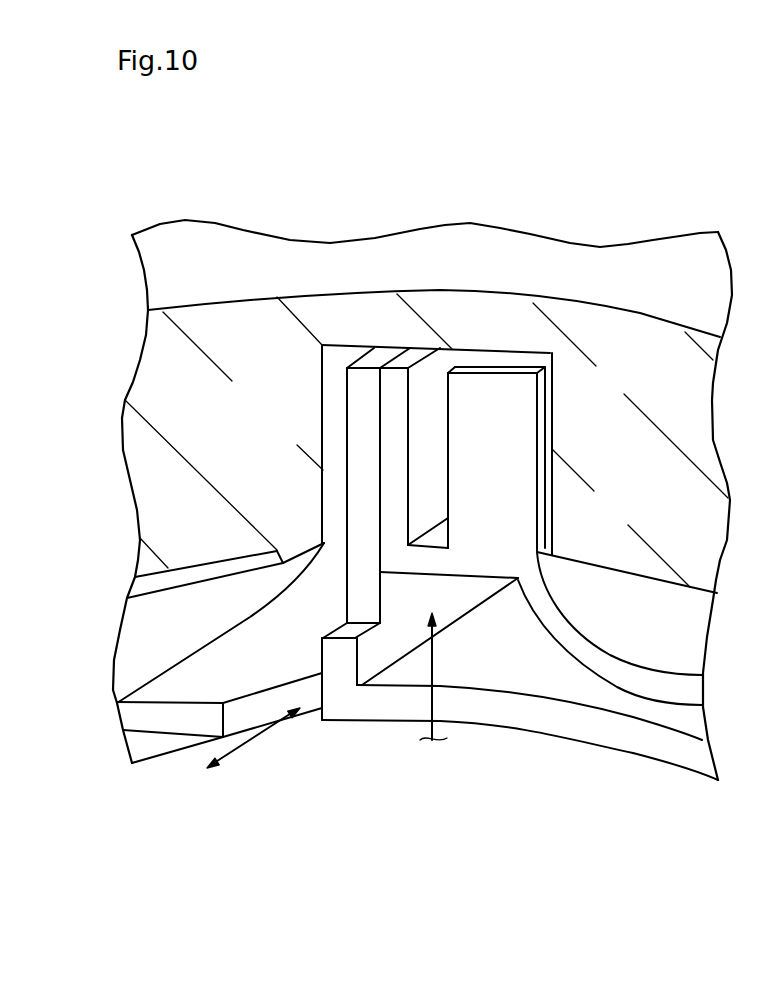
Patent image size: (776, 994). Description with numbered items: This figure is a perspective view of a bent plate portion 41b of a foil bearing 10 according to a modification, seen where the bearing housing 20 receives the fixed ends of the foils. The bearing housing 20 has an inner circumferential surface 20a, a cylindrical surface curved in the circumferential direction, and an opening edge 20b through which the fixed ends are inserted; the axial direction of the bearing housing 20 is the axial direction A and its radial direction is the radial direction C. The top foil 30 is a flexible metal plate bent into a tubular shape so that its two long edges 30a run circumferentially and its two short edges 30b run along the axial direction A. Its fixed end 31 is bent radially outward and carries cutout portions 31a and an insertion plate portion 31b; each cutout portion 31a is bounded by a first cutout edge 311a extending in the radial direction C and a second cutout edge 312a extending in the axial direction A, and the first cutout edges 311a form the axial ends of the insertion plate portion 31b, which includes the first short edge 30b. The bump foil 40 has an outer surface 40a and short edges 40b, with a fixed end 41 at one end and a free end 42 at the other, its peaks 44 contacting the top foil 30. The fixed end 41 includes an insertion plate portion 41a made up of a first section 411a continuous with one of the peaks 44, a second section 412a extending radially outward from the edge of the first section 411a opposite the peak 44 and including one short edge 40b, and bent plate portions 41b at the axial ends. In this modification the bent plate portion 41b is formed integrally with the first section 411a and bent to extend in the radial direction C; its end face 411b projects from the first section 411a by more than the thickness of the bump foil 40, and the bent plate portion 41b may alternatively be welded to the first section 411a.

The connector device 10 is at (528, 247).
The bearing housing 20 is at (710, 313).
The inner circumferential surface 20a is at (698, 596).
The opening edge of housing 20b is at (538, 355).
The top foil 30 is at (377, 722).
The long edge 30a is at (343, 700).
The short edge 30b is at (388, 357).
The fixed end 31 is at (360, 357).
The cutout portion 31a is at (368, 547).
The insertion plate portion 31b is at (358, 433).
The first cutout edge 311a is at (358, 402).
The second cutout edge 312a is at (348, 627).
The bump foil 40 is at (667, 672).
The curved surface of base member 40a is at (558, 628).
The short edge 40b is at (423, 353).
The fixed end 41 is at (453, 358).
The insertion plate portion 41a is at (547, 482).
The bent plate portion 41b is at (518, 427).
The first section 411a is at (426, 560).
The end face 411b is at (507, 392).
The second section 412a is at (395, 513).
The free end 42 is at (220, 570).
The peak 44 is at (647, 690).
The radial direction C is at (436, 657).
The axial direction A is at (257, 728).